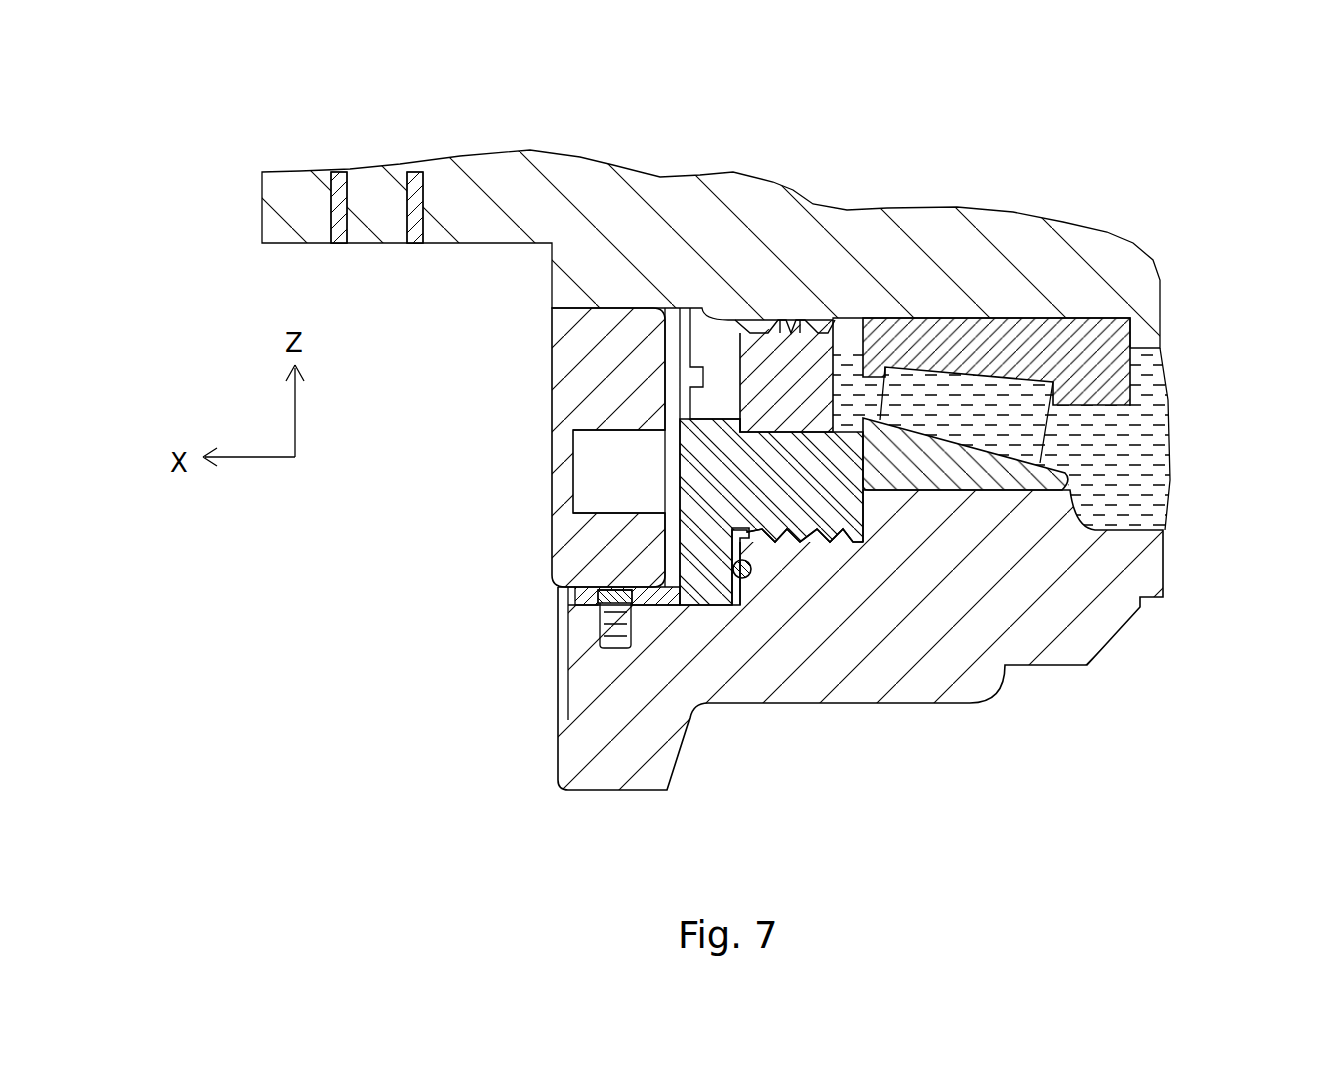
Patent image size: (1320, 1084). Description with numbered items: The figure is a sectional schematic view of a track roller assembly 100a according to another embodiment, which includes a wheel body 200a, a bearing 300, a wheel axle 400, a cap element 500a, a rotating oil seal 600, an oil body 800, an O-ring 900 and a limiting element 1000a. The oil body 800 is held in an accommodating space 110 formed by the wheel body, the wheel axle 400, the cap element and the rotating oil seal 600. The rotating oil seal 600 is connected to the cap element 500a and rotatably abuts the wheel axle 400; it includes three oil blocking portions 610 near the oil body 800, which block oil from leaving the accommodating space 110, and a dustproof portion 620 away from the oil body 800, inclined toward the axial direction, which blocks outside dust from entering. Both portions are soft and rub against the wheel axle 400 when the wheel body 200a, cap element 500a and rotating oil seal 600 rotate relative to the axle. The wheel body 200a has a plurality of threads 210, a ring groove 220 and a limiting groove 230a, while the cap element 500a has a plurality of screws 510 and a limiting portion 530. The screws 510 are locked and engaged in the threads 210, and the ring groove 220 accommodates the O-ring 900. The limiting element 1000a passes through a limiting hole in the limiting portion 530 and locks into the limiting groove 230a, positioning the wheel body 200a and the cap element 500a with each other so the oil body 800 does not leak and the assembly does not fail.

The track roller assembly 100a is at (1130, 152).
The wheel axle 400 is at (530, 183).
The oil body 800 is at (843, 365).
The accommodating space 110 is at (865, 318).
The rotating oil seal 600 is at (815, 110).
The dustproof portion 620 is at (735, 322).
The oil blocking portion 610 is at (790, 318).
The cap element 500a is at (708, 473).
The screws 510 is at (780, 532).
The limiting portion 530 is at (568, 598).
The limiting element 1000a is at (603, 622).
The limiting groove 230a is at (617, 647).
The wheel body 200a is at (1042, 633).
The threads 210 is at (813, 537).
The bearing 300 is at (963, 468).
The O-ring 900 is at (740, 580).
The ring groove 220 is at (750, 578).